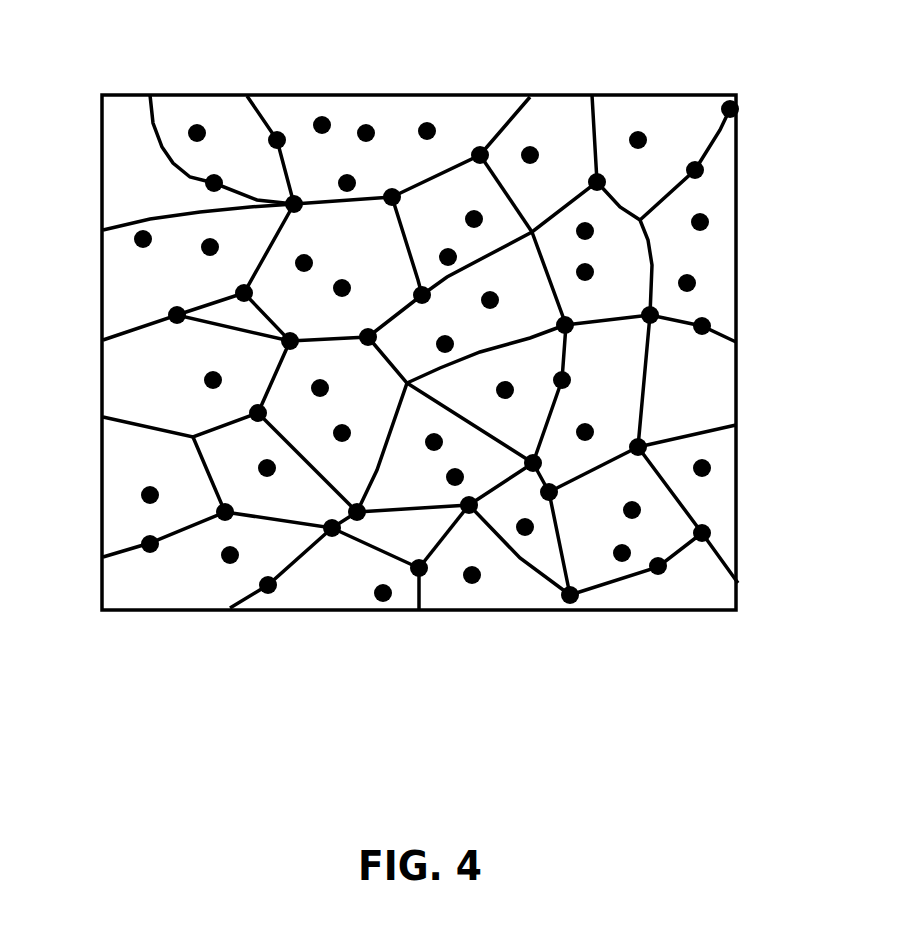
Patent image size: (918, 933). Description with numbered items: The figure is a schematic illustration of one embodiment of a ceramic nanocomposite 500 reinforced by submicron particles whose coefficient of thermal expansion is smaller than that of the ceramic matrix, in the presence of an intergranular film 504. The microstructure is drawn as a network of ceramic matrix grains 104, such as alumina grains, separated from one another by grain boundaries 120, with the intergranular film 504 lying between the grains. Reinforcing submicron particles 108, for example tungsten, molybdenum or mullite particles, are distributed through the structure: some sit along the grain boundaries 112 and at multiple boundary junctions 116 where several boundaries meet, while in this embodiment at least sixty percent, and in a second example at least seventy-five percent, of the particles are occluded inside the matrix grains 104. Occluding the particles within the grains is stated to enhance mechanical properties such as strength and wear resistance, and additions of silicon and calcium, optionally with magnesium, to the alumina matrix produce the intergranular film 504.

The grains 104 is at (225, 122).
The submicron particles 108 is at (143, 237).
The grain boundaries 112 is at (703, 233).
The multiple boundary junctions 116 is at (395, 187).
The grain boundaries 120 is at (453, 100).
The ceramic nanocomposite 500 is at (498, 80).
The intergranular film 504 is at (647, 132).